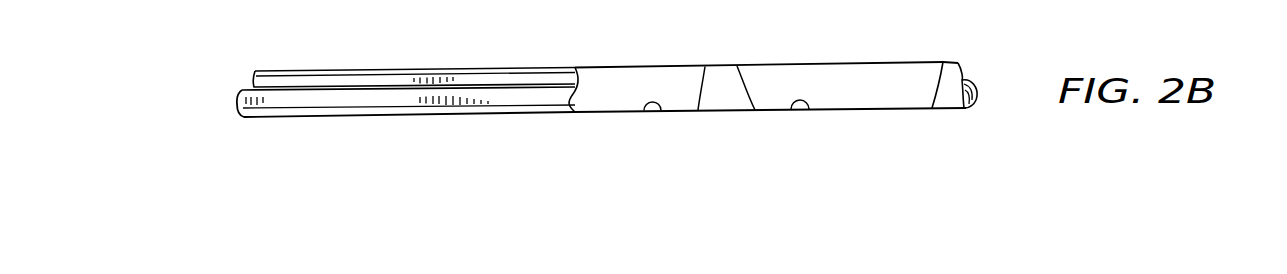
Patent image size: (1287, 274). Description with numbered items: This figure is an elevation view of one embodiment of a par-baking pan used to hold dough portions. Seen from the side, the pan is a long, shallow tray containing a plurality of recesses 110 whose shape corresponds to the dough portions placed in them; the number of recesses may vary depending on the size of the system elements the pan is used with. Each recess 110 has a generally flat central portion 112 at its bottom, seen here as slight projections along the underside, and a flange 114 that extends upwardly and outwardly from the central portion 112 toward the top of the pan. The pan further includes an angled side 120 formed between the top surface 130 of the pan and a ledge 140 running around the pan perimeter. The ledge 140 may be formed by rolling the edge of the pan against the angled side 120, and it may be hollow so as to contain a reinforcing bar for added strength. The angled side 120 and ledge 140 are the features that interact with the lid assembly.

The recess 110 is at (612, 82).
The central portion 112 is at (657, 109).
The flange 114 is at (702, 70).
The angled side 120 is at (290, 79).
The top surface 130 is at (952, 61).
The ledge 140 is at (977, 95).